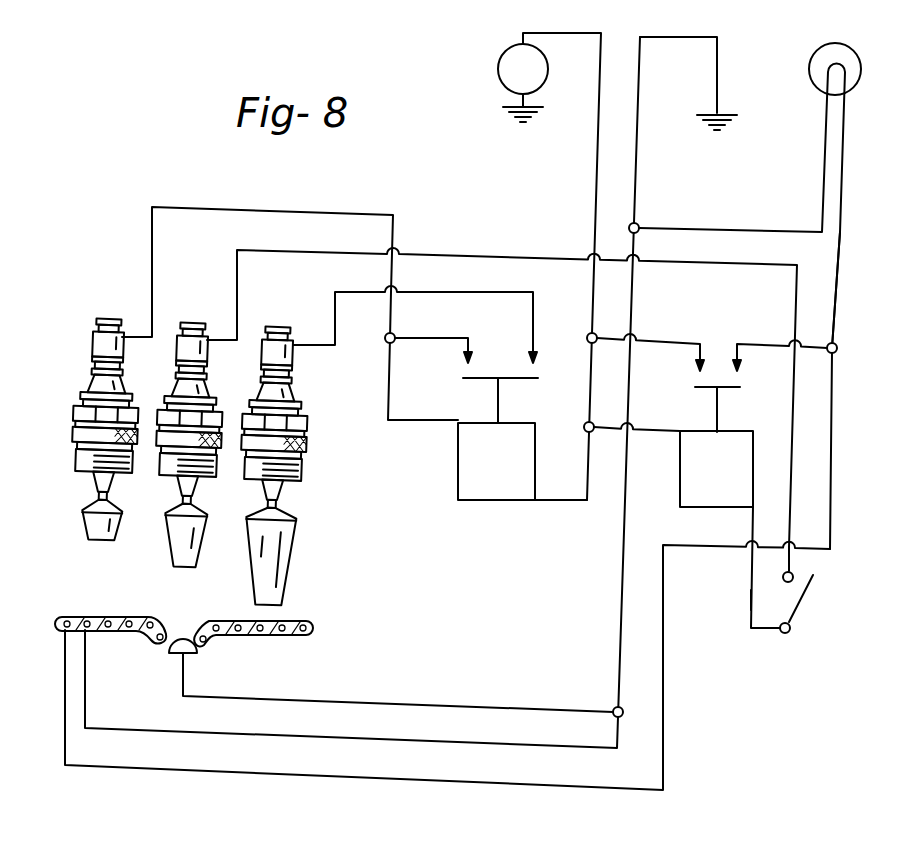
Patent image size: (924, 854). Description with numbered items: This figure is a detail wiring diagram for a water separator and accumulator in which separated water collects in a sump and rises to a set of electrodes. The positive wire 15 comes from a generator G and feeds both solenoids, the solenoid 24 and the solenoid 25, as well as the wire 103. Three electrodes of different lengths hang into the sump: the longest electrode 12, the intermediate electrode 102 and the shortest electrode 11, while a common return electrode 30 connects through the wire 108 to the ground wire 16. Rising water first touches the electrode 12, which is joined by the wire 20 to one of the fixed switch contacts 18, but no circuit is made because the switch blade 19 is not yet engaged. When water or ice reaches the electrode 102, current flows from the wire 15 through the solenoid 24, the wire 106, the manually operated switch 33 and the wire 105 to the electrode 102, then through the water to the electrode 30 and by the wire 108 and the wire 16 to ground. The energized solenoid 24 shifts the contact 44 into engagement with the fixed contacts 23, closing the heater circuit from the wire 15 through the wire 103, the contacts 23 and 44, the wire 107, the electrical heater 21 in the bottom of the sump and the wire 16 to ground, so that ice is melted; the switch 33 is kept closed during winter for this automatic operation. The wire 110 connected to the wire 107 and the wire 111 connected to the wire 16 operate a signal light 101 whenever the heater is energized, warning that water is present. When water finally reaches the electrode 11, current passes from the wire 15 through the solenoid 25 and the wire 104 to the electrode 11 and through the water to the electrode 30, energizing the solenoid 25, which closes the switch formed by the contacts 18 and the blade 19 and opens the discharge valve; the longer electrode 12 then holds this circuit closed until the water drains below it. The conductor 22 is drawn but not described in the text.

The electrode 11 is at (84, 526).
The electrode 102 is at (173, 556).
The electrode 12 is at (258, 594).
The electrical heater 21 is at (93, 618).
The electrode 30 is at (198, 657).
The positive wire 15 is at (599, 101).
The wire 16 is at (640, 70).
The wire 104 is at (215, 208).
The wire 105 is at (680, 267).
The wire 20 is at (440, 292).
The fixed switch contacts 18 is at (526, 356).
The switch blade 19 is at (468, 381).
The solenoid 25 is at (522, 461).
The wire 111 is at (690, 229).
The signal light 101 is at (862, 66).
The wire 110 is at (841, 250).
The return conductor 22 is at (838, 406).
The wire 103 is at (657, 340).
The fixed contacts 23 is at (733, 366).
The shiftable contact 44 is at (699, 389).
The solenoid 24 is at (687, 525).
The manually operated switch 33 is at (800, 605).
The wire 106 is at (751, 601).
The wire 107 is at (663, 698).
The wire 108 is at (395, 703).